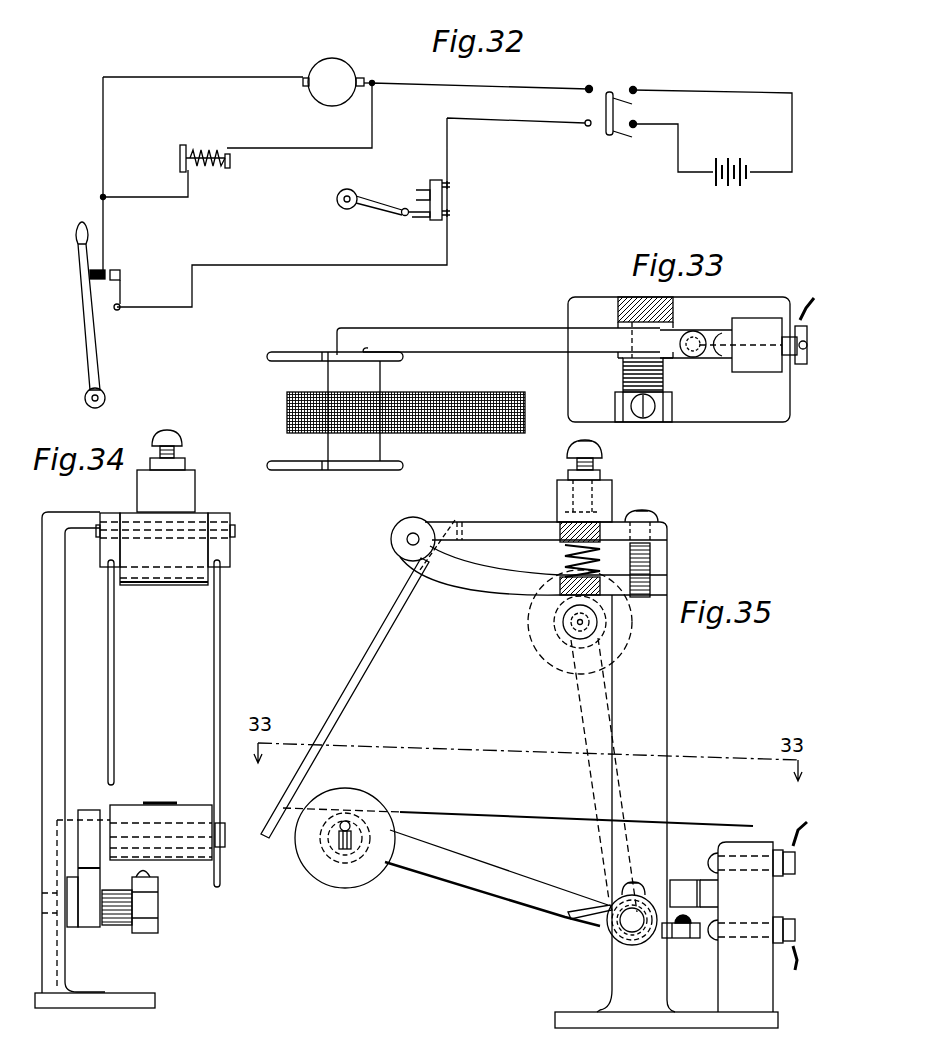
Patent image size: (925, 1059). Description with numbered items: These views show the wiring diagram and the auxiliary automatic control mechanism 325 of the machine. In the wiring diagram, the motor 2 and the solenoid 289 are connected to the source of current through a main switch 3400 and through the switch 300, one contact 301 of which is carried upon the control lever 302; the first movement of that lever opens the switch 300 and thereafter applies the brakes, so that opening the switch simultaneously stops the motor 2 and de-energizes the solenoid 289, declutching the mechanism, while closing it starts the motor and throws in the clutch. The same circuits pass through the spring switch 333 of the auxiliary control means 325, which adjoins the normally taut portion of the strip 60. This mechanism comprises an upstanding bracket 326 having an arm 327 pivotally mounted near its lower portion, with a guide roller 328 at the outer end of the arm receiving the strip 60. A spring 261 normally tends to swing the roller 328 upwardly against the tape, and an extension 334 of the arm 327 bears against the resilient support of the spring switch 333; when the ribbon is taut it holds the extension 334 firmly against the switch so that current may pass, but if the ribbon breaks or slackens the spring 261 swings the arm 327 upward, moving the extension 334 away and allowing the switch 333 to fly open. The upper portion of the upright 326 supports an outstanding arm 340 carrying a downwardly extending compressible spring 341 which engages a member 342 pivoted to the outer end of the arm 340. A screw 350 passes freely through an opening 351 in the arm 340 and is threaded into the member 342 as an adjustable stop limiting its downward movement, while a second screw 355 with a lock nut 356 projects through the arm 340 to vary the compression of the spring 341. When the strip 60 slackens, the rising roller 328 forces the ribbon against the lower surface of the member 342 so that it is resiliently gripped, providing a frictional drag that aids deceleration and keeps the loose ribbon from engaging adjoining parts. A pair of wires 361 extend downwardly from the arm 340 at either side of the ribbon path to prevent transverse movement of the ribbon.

In FIG. 32, the motor 2 is at (354, 71).
In FIG. 32, the solenoid 289 is at (233, 170).
In FIG. 32, the spring switch 333 is at (420, 200).
In FIG. 35, the spring switch 333 is at (680, 890).
In FIG. 32, the guide roller 328 is at (340, 207).
In FIG. 33, the guide roller 328 is at (340, 445).
In FIG. 34, the guide roller 328 is at (192, 833).
In FIG. 35, the guide roller 328 is at (333, 875).
In FIG. 32, the switch 300 is at (110, 265).
In FIG. 32, the contact 301 is at (108, 279).
In FIG. 32, the control lever 302 is at (98, 375).
In FIG. 32, the switch 3400 is at (608, 126).
In FIG. 33, the wires 361 is at (278, 352).
In FIG. 34, the wires 361 is at (210, 665).
In FIG. 35, the wires 361 is at (372, 652).
In FIG. 33, the arm 327 is at (507, 338).
In FIG. 34, the arm 327 is at (87, 868).
In FIG. 35, the arm 327 is at (525, 900).
In FIG. 33, the strip 60 is at (442, 435).
In FIG. 34, the strip 60 is at (157, 802).
In FIG. 35, the strip 60 is at (513, 817).
In FIG. 33, the spring 261 is at (665, 382).
In FIG. 34, the spring 261 is at (122, 930).
In FIG. 35, the spring 261 is at (583, 925).
In FIG. 34, the screw 355 is at (180, 437).
In FIG. 35, the screw 355 is at (603, 455).
In FIG. 35, the lock nut 356 is at (607, 476).
In FIG. 34, the arm 340 is at (75, 512).
In FIG. 35, the arm 340 is at (493, 522).
In FIG. 34, the member 342 is at (177, 587).
In FIG. 35, the member 342 is at (475, 595).
In FIG. 35, the opening 351 is at (663, 530).
In FIG. 35, the screw 350 is at (650, 565).
In FIG. 35, the compressible spring 341 is at (565, 552).
In FIG. 35, the bracket 326 is at (653, 698).
In FIG. 35, the auxiliary automatic control mechanism 325 is at (684, 730).
In FIG. 35, the extension 334 is at (668, 938).